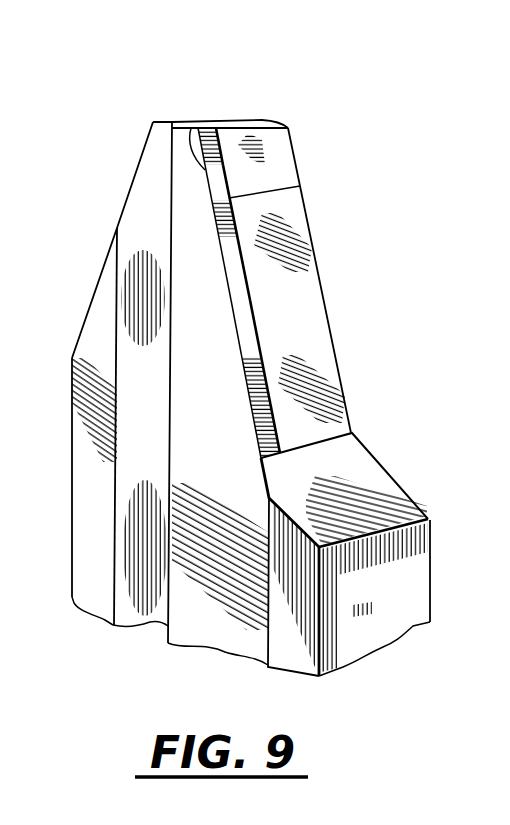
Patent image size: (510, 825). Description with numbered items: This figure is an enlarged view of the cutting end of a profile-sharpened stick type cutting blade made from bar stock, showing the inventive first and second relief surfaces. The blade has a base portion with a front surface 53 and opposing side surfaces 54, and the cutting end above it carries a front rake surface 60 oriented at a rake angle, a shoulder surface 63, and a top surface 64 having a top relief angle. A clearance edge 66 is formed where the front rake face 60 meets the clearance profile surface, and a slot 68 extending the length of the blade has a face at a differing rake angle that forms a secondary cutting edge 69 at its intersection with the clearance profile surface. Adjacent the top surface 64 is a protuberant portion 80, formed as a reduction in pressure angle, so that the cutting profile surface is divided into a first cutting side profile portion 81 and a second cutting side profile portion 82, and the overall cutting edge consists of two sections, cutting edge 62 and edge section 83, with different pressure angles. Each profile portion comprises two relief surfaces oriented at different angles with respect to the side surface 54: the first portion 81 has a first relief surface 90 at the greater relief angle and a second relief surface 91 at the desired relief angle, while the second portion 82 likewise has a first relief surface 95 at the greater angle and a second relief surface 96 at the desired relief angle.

The front surface 53 is at (295, 638).
The side surface 54 is at (386, 602).
The front rake surface 60 is at (108, 511).
The cutting edge 62 is at (240, 362).
The shoulder surface 63 is at (363, 475).
The top surface 64 is at (232, 126).
The clearance edge 66 is at (91, 300).
The slot 68 is at (140, 428).
The secondary cutting edge 69 is at (138, 168).
The protuberant portion 80 is at (290, 138).
The first cutting side profile portion 81 is at (307, 155).
The second cutting side profile portion 82 is at (318, 271).
The cutting edge section 83 is at (193, 124).
The first relief surface 90 is at (265, 168).
The second relief surface 91 is at (215, 183).
The first relief surface 95 is at (305, 324).
The second relief surface 96 is at (232, 263).